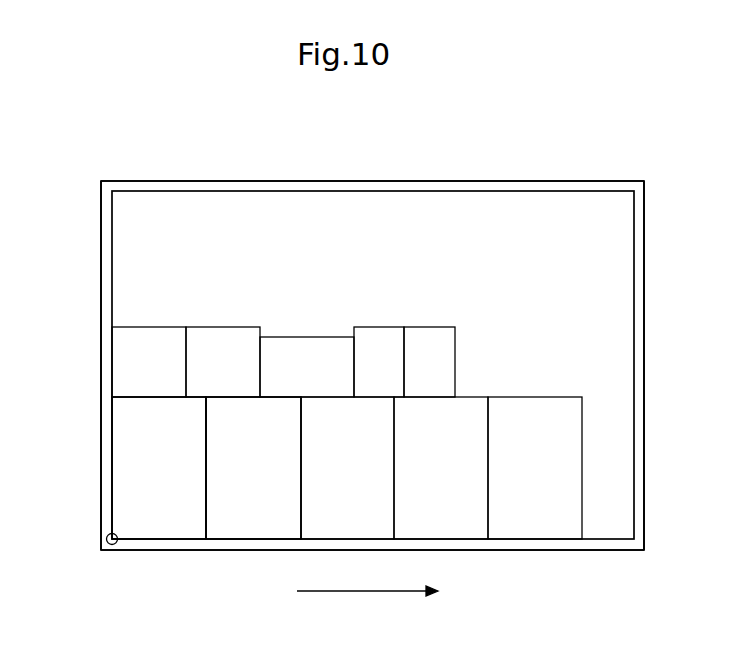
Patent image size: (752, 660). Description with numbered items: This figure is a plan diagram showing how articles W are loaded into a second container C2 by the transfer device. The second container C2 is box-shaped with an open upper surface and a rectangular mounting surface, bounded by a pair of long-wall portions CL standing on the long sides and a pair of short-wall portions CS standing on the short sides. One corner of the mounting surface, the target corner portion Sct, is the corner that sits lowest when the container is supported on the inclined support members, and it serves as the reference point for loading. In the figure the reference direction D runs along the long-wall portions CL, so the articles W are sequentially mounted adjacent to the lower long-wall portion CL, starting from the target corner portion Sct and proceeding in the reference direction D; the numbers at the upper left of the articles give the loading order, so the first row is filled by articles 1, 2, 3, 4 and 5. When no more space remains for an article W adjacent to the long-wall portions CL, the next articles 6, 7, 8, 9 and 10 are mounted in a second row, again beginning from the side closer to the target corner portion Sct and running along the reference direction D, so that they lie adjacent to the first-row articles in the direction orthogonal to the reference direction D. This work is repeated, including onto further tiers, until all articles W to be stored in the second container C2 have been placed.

The second container C2 is at (118, 168).
The long-wall portions CL is at (528, 180).
The short-wall portions CS is at (100, 294).
The first loaded article 1 is at (159, 468).
The second loaded article 2 is at (253, 468).
The third loaded article 3 is at (347, 468).
The fourth loaded article 4 is at (441, 468).
The fifth loaded article 5 is at (535, 468).
The sixth loaded article 6 is at (149, 362).
The seventh loaded article 7 is at (223, 362).
The eighth loaded article 8 is at (307, 367).
The ninth loaded article 9 is at (379, 362).
The tenth loaded article 10 is at (429, 362).
The articles W is at (272, 520).
The target corner portion Sct is at (115, 534).
The reference direction D is at (379, 592).